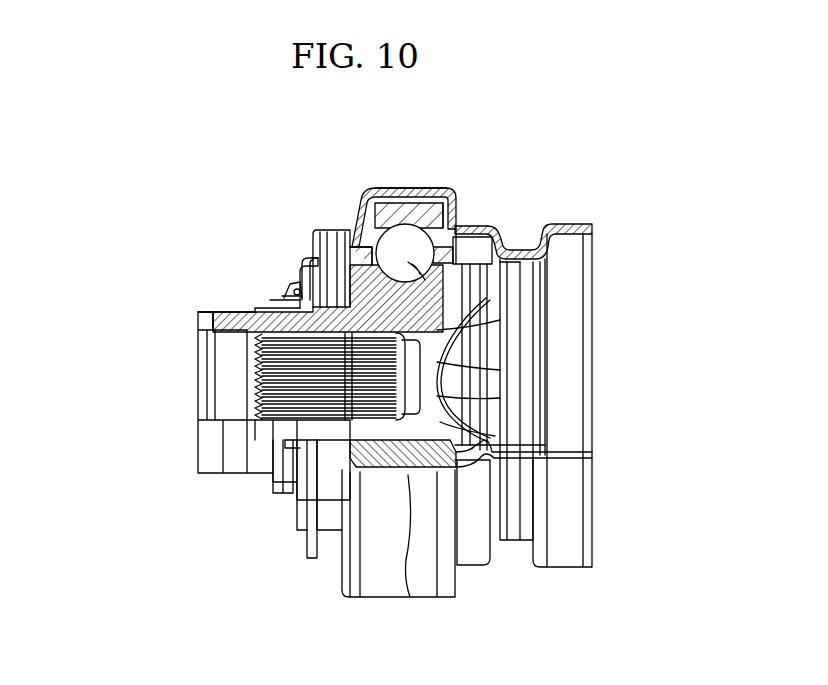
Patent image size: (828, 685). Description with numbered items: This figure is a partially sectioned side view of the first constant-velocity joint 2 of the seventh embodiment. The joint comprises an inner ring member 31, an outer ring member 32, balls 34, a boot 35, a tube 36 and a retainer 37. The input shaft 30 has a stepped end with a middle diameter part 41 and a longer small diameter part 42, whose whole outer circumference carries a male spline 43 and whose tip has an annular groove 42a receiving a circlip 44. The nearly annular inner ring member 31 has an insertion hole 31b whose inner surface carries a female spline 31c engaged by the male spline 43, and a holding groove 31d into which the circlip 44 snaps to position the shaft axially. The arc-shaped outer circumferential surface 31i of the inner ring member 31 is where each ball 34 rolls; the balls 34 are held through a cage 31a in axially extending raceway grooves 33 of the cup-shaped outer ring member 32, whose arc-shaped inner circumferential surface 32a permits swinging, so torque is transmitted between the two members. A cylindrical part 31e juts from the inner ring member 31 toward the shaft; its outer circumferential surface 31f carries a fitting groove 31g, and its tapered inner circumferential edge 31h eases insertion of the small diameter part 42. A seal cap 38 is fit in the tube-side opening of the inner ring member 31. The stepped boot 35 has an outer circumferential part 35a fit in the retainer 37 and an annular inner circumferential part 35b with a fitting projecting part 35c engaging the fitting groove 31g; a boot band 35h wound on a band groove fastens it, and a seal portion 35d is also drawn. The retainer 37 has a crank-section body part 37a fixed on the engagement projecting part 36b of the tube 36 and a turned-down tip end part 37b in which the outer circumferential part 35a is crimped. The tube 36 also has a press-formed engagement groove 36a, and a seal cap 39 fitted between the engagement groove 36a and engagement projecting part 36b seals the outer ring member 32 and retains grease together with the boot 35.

The first constant-velocity joint 2 is at (236, 211).
The input shaft 30 is at (198, 405).
The inner ring member 31 is at (445, 318).
The cage 31a is at (548, 276).
The insertion hole 31b is at (216, 310).
The female spline 31c is at (284, 490).
The holding groove 31d is at (335, 530).
The cylindrical part 31e is at (445, 348).
The outer circumferential surface 31f is at (280, 300).
The fitting groove 31g is at (282, 300).
The inner circumferential edge 31h is at (200, 326).
The outer circumferential surface 31i is at (462, 306).
The outer ring member 32 is at (457, 214).
The inner circumferential surface 32a is at (431, 190).
The raceway grooves 33 is at (376, 204).
The balls 34 is at (430, 262).
The boot 35 is at (302, 266).
The outer circumferential part 35a is at (318, 256).
The inner circumferential part 35b is at (296, 290).
The fitting projecting part 35c is at (290, 298).
The seal portion 35d is at (438, 453).
The boot band 35h is at (300, 284).
The tube 36 is at (571, 224).
The engagement groove 36a is at (520, 250).
The engagement projecting part 36b is at (452, 194).
The retainer 37 is at (364, 196).
The body part 37a is at (404, 186).
The tip end part 37b is at (336, 232).
The seal cap 38 is at (440, 418).
The seal cap 39 is at (440, 380).
The middle diameter part 41 is at (217, 362).
The small diameter part 42 is at (275, 374).
The annular groove 42a is at (300, 498).
The male spline 43 is at (260, 425).
The circlip 44 is at (288, 448).